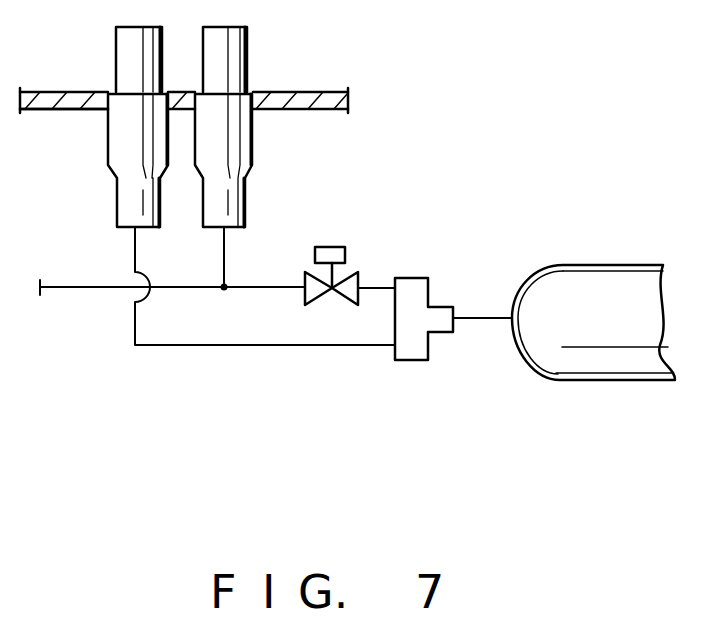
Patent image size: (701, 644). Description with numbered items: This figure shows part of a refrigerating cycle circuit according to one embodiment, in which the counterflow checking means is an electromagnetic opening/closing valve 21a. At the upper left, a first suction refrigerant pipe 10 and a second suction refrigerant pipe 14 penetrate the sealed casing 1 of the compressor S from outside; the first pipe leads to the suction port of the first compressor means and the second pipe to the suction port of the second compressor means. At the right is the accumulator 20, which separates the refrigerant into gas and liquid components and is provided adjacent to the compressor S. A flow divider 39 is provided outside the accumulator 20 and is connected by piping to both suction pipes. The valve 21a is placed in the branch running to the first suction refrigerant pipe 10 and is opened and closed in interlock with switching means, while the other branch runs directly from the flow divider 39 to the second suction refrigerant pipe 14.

The sealed casing 1 is at (332, 110).
The compressor S is at (52, 114).
The second suction refrigerant pipe 14 is at (108, 146).
The first suction refrigerant pipe 10 is at (253, 153).
The electromagnetic opening/closing valve 21a is at (378, 231).
The flow divider 39 is at (413, 360).
The accumulator 20 is at (585, 265).